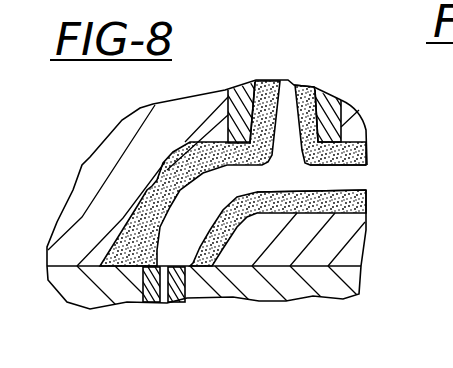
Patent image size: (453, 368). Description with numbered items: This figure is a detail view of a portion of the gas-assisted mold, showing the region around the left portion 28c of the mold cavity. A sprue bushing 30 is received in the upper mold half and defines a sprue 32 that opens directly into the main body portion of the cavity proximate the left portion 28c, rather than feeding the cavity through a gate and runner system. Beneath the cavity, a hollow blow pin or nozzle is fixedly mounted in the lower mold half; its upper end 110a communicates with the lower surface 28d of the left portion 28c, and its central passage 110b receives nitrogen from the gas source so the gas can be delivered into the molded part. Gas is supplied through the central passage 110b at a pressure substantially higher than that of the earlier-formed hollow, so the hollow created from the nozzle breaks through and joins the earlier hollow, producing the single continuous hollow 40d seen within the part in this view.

The left portion 28c is at (152, 187).
The lower surface 28d is at (193, 266).
The sprue bushing 30 is at (339, 102).
The sprue 32 is at (309, 100).
The continuous hollow 40d is at (345, 165).
The upper end 110a is at (153, 265).
The central passage 110b is at (170, 262).